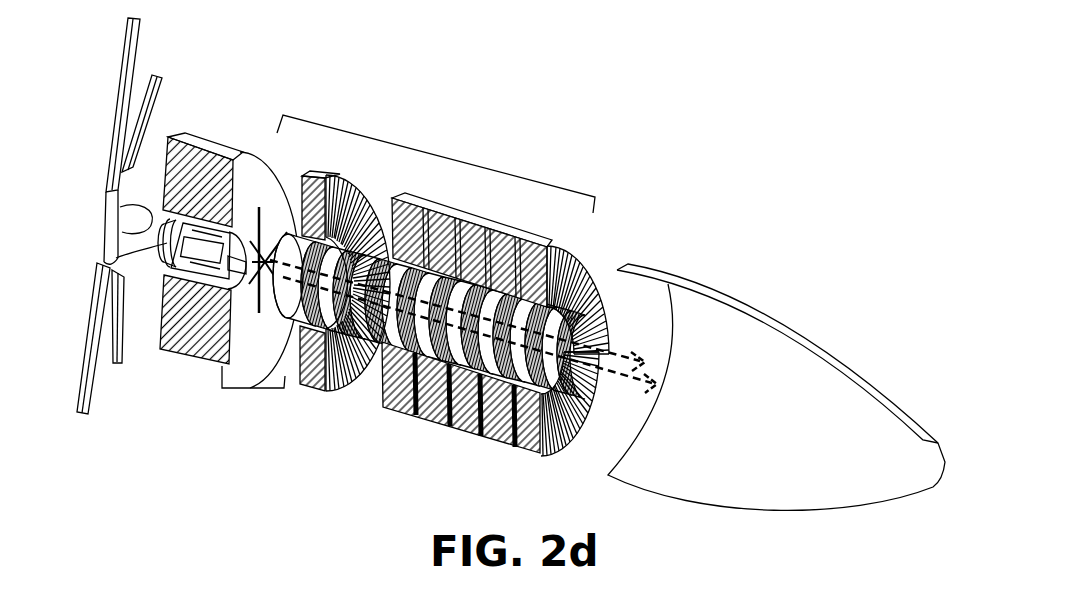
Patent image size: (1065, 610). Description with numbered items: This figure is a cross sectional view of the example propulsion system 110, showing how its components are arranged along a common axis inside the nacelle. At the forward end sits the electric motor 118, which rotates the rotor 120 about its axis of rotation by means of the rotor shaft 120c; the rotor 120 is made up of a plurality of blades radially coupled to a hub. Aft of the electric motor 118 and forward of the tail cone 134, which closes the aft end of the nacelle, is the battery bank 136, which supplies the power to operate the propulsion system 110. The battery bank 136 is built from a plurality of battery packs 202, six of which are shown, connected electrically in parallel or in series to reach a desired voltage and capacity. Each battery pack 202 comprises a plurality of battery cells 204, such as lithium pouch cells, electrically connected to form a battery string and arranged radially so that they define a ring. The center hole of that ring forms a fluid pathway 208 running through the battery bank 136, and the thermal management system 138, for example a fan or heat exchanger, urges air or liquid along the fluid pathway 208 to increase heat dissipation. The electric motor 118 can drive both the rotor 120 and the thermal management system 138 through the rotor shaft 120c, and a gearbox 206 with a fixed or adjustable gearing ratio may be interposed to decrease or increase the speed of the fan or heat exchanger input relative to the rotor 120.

The propulsion system 110 is at (808, 224).
The electric motor 118 is at (227, 146).
The rotor 120 is at (156, 70).
The rotor shaft 120c is at (105, 261).
The tail cone 134 is at (693, 282).
The battery bank 136 is at (440, 156).
The thermal management system 138 is at (252, 390).
The battery pack 202 is at (336, 168).
The battery cell 204 is at (296, 380).
The gearbox 206 is at (202, 254).
The fluid pathway 208 is at (615, 380).